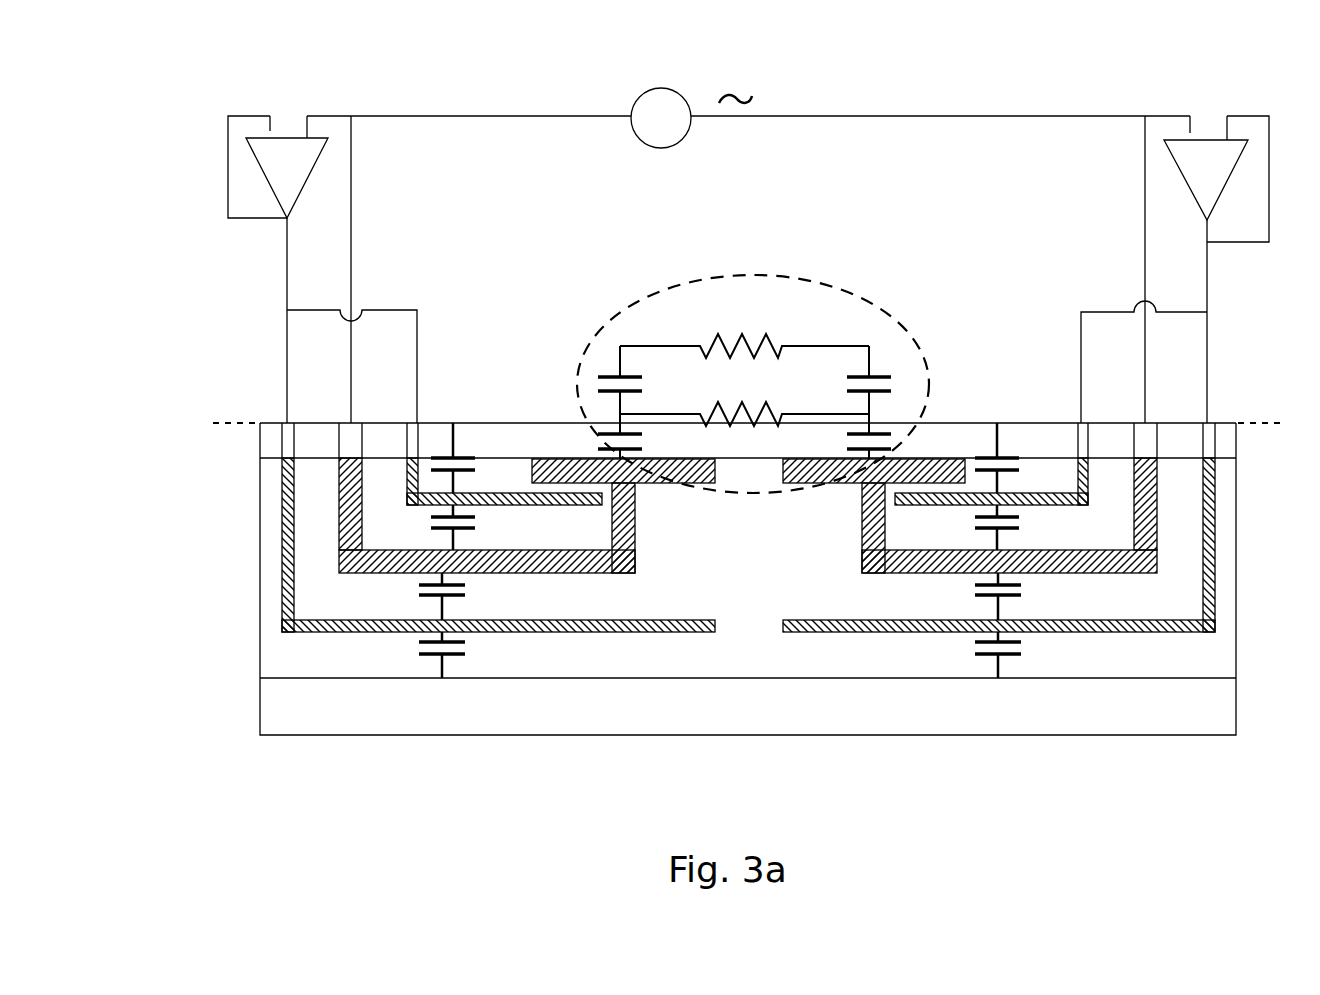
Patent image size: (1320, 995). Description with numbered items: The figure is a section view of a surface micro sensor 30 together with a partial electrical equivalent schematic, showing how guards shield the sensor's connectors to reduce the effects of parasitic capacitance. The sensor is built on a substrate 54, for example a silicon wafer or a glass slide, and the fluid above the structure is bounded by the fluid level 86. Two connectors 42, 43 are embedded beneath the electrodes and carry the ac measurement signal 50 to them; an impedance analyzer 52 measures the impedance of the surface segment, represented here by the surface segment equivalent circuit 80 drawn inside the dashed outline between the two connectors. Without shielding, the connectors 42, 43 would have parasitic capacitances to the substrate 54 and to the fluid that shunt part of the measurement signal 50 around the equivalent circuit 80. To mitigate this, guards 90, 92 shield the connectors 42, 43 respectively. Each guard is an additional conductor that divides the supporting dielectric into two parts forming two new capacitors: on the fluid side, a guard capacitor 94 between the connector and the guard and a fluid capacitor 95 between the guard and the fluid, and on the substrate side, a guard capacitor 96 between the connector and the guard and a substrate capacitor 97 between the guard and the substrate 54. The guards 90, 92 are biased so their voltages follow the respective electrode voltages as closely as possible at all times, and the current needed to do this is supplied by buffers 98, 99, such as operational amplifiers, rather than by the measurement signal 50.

The surface micro sensor 30 is at (166, 296).
The connector 42 is at (599, 576).
The connector 43 is at (941, 577).
The ac measurement signal 50 is at (762, 90).
The impedance analyzer 52 is at (643, 93).
The substrate 54 is at (1157, 702).
The surface segment equivalent circuit 80 is at (636, 324).
The fluid surface level 86 is at (213, 438).
The guard 90 is at (407, 483).
The guard 92 is at (1088, 483).
The C_guard capacitor 94 is at (472, 524).
The C_fluid capacitor 95 is at (455, 468).
The C_guard capacitor 96 is at (428, 588).
The C_substrate capacitor 97 is at (463, 657).
The buffer 98 is at (287, 161).
The buffer 99 is at (1225, 172).